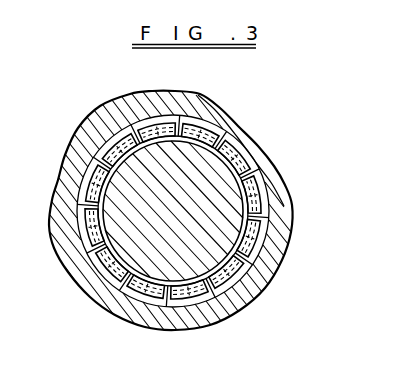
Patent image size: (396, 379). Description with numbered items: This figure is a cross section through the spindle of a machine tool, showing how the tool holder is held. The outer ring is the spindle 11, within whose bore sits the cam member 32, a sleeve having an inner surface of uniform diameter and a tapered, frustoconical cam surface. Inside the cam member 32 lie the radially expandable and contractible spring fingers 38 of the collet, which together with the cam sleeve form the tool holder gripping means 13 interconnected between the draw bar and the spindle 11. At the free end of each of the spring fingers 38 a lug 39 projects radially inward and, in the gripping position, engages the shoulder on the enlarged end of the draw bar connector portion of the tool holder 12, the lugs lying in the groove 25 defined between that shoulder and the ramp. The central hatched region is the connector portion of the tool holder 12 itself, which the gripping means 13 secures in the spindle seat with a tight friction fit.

The spindle 11 is at (249, 113).
The tool holder 12 is at (220, 198).
The tool holder gripping means 13 is at (258, 227).
The groove 25 is at (265, 288).
The cam member 32 is at (257, 243).
The spring fingers 38 is at (226, 107).
The lug 39 is at (225, 150).